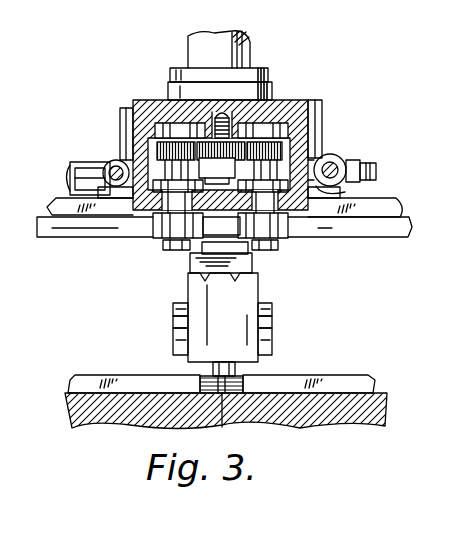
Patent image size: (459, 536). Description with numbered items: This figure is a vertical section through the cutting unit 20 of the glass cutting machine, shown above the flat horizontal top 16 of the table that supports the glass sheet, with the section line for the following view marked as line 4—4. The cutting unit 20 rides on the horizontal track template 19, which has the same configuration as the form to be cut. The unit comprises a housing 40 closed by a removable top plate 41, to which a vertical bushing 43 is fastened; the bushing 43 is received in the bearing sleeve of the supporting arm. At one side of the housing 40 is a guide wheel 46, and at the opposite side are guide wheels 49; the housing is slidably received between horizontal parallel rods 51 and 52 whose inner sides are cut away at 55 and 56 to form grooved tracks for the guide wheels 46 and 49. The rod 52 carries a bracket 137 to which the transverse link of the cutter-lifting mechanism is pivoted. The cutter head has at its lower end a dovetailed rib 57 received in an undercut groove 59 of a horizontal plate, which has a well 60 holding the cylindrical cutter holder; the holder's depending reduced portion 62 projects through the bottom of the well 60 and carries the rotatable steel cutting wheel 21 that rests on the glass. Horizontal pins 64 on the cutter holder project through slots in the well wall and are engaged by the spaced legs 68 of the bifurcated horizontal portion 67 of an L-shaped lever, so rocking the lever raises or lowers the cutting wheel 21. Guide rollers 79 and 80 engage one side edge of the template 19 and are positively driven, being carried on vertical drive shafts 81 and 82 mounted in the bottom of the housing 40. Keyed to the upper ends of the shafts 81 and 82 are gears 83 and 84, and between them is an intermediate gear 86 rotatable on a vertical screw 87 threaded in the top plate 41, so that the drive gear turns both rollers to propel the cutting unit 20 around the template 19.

The section line 4- 4 is at (90, 138).
The flat horizontal top 16 is at (68, 406).
The horizontal track template 19 is at (396, 229).
The cutting unit 20 is at (288, 76).
The rotatable steel cutting wheel 21 is at (222, 425).
The housing 40 is at (300, 138).
The removable top plate 41 is at (153, 110).
The vertical bushing 43 is at (190, 50).
The guide wheel 46 is at (315, 158).
The guide wheels 49 is at (128, 182).
The horizontal parallel rod 51 is at (340, 193).
The horizontal parallel rod 52 is at (82, 207).
The cut-away portion 55 is at (343, 159).
The cut-away portion 56 is at (108, 161).
The dovetailed rib 57 is at (240, 290).
The undercut groove 59 is at (203, 283).
The well 60 is at (260, 338).
The depending reduced portion 62 is at (237, 371).
The horizontal pins 64 is at (176, 313).
The horizontal portion 67 is at (178, 343).
The spaced legs 68 is at (176, 322).
The guide roller 79 is at (281, 244).
The guide roller 80 is at (160, 244).
The vertical drive shaft 81 is at (355, 208).
The vertical drive shaft 82 is at (154, 226).
The gear 83 is at (283, 152).
The gear 84 is at (140, 132).
The intermediate gear 86 is at (221, 163).
The vertical screw 87 is at (228, 108).
The bracket 137 is at (70, 184).